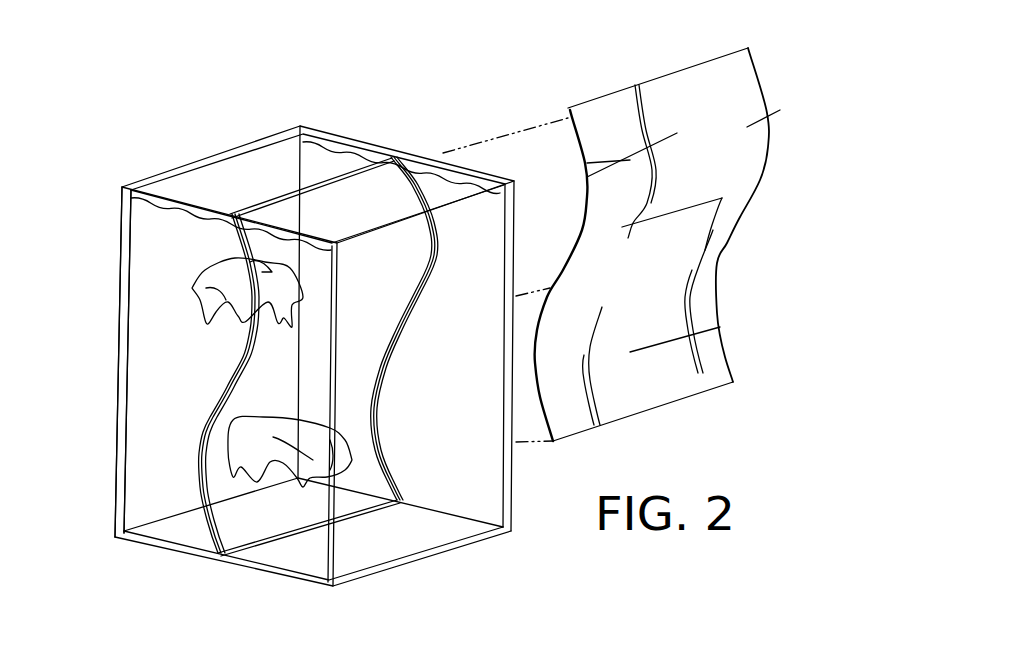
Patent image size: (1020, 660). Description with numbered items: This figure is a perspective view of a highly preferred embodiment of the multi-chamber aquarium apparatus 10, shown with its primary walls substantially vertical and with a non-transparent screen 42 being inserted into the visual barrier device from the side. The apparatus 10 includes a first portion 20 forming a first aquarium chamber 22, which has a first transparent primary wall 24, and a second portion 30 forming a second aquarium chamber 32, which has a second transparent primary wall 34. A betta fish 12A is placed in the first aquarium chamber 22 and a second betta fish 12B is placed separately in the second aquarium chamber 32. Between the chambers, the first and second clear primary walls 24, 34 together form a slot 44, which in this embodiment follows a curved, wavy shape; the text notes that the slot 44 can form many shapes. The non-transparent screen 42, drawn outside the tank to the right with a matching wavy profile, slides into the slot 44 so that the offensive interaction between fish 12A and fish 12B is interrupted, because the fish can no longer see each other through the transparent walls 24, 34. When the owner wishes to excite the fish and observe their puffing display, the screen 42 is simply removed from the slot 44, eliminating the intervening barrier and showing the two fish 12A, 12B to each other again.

The multi-chamber aquarium apparatus 10 is at (231, 115).
The betta fish 12A is at (192, 288).
The betta fish 12B is at (330, 485).
The first portion 20 is at (153, 433).
The first aquarium chamber 22 is at (217, 192).
The first transparent primary wall 24 is at (203, 422).
The second portion 30 is at (440, 485).
The second aquarium chamber 32 is at (428, 187).
The second transparent primary wall 34 is at (203, 503).
The non-transparent screen 42 is at (750, 125).
The slot 44 is at (203, 522).